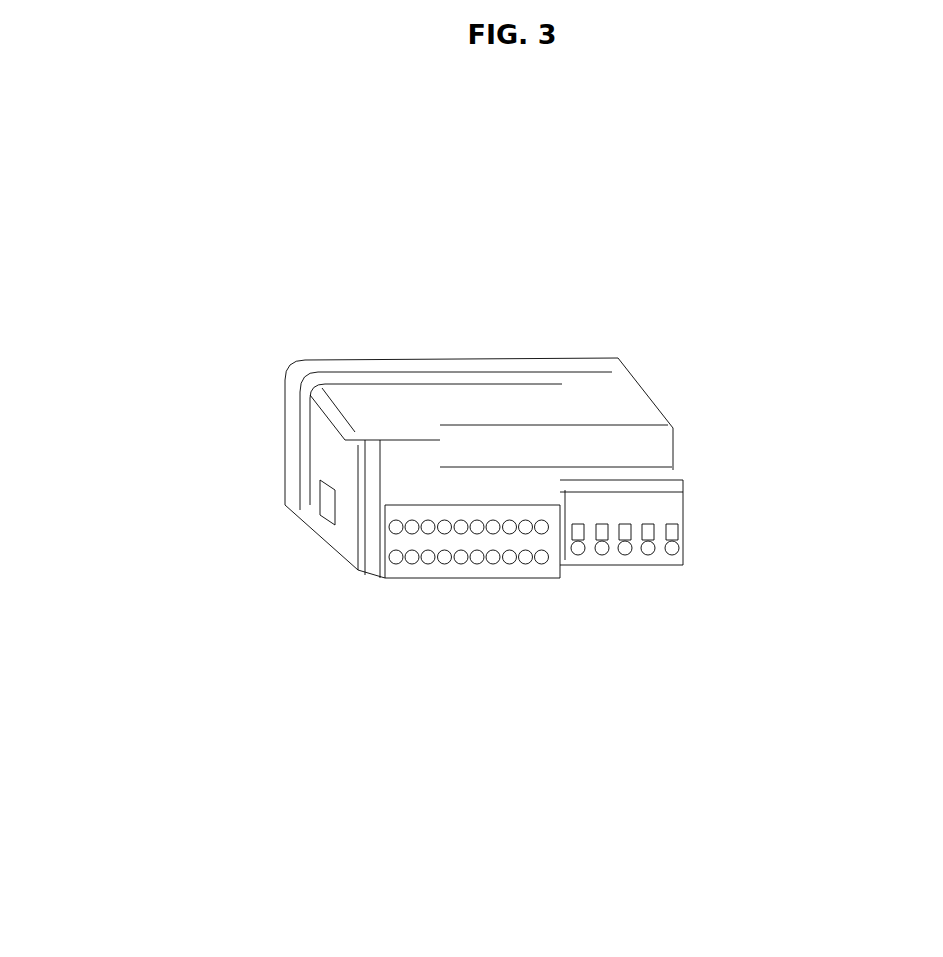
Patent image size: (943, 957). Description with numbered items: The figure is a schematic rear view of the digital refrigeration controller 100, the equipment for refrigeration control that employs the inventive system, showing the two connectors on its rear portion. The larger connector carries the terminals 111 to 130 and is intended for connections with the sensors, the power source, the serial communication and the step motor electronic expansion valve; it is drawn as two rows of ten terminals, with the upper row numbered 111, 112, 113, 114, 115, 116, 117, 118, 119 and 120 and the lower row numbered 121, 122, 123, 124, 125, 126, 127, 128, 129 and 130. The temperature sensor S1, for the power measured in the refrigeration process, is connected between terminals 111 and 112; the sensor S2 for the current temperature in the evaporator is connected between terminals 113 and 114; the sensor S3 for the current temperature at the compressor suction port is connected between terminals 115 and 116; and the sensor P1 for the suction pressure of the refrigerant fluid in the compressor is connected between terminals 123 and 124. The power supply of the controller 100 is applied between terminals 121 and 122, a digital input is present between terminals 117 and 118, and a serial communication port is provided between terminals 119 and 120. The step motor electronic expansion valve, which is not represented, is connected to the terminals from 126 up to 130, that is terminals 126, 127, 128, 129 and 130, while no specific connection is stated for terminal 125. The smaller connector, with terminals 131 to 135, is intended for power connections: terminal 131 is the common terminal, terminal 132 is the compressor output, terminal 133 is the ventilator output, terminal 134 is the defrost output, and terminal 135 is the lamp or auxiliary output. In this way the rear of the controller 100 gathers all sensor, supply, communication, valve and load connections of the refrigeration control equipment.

The digital refrigeration controller 100 is at (608, 403).
The connector terminal 111 is at (396, 506).
The connector terminal 112 is at (412, 506).
The connector terminal 113 is at (428, 506).
The connector terminal 114 is at (444, 506).
The connector terminal 115 is at (461, 506).
The connector terminal 116 is at (477, 506).
The connector terminal 117 is at (493, 506).
The connector terminal 118 is at (510, 506).
The connector terminal 119 is at (526, 506).
The connector terminal 120 is at (542, 506).
The connector terminal 121 is at (396, 572).
The connector terminal 122 is at (412, 572).
The connector terminal 123 is at (428, 572).
The connector terminal 124 is at (444, 572).
The connector terminal 125 is at (461, 572).
The connector terminal 126 is at (477, 572).
The connector terminal 127 is at (493, 572).
The connector terminal 128 is at (510, 572).
The connector terminal 129 is at (526, 572).
The connector terminal 130 is at (542, 572).
The common terminal 131 is at (672, 558).
The compressor output 132 is at (648, 558).
The ventilator output 133 is at (625, 558).
The defrost output 134 is at (602, 558).
The lamp or auxiliary output 135 is at (578, 558).